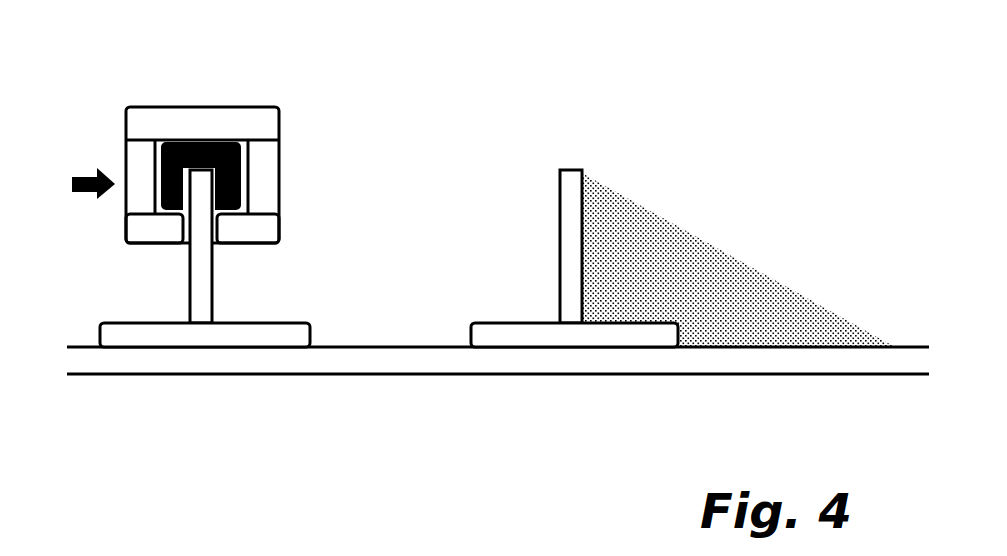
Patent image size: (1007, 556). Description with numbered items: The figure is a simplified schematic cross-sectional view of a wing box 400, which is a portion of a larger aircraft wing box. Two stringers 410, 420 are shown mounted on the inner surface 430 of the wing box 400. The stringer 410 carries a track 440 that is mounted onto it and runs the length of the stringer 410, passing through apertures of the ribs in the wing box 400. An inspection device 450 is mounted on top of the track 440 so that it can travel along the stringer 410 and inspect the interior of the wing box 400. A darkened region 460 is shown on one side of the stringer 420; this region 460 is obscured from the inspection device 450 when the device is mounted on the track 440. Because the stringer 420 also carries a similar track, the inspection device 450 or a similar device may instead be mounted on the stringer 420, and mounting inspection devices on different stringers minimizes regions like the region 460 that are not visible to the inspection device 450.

The wing box 400 is at (134, 53).
The stringer 410 is at (212, 305).
The stringer 420 is at (513, 323).
The inner surface 430 is at (390, 345).
The track 440 is at (240, 180).
The inspection device 450 is at (278, 110).
The darkened region 460 is at (677, 278).